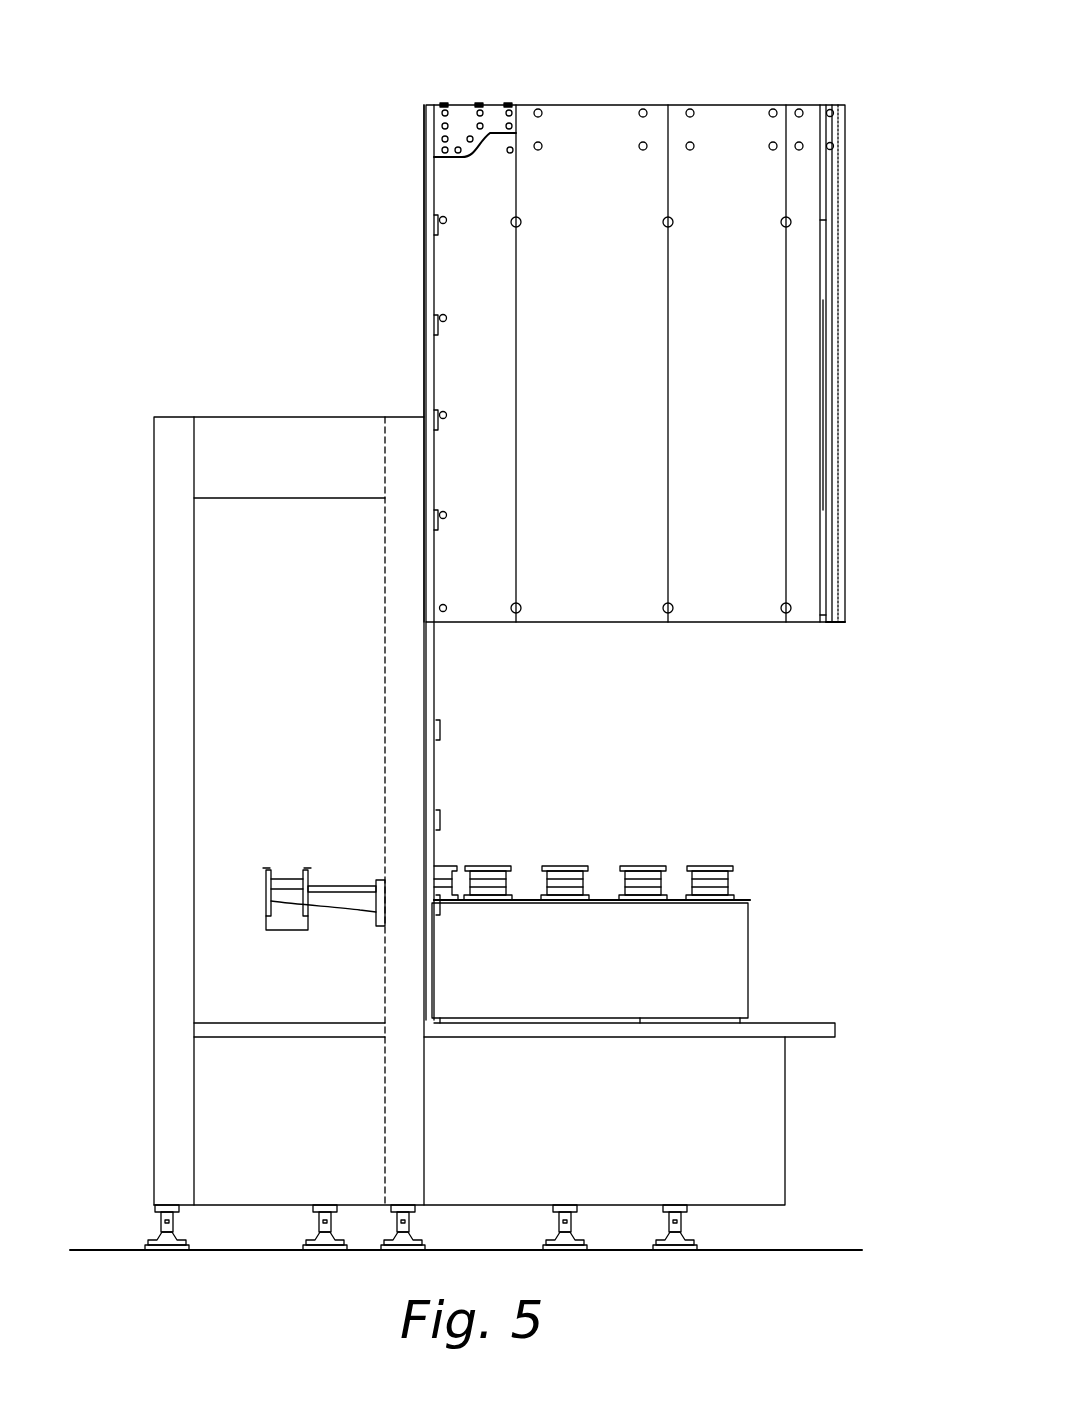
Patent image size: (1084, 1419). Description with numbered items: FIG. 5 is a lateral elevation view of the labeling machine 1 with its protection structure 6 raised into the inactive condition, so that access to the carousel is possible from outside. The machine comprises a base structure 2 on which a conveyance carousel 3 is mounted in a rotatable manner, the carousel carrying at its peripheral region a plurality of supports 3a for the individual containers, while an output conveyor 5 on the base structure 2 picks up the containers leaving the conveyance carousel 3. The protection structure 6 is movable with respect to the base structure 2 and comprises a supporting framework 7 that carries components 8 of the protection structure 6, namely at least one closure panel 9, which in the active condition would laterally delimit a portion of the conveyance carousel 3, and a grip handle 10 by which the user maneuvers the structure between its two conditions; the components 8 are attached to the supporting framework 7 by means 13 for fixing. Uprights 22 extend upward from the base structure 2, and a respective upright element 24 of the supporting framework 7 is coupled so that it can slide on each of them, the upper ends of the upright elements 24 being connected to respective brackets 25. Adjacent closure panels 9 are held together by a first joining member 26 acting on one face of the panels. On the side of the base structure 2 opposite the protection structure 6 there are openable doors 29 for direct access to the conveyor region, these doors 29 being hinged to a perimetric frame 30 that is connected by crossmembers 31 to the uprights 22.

The labeling machine 1 is at (255, 243).
The base structure 2 is at (268, 1190).
The conveyance carousel 3 is at (724, 993).
The supports 3a is at (692, 862).
The output conveyor 5 is at (287, 822).
The protection structure 6 is at (850, 362).
The supporting framework 7 is at (422, 131).
The components 8 is at (570, 105).
The closure panel 9 is at (805, 548).
The grip handle 10 is at (845, 437).
The means for fixing 13 is at (645, 104).
The uprights 22 is at (402, 436).
The upright element 24 is at (426, 248).
The brackets 25 is at (465, 105).
The first joining member 26 is at (796, 225).
The openable doors 29 is at (140, 626).
The perimetric frame 30 is at (176, 464).
The crossmembers 31 is at (273, 440).